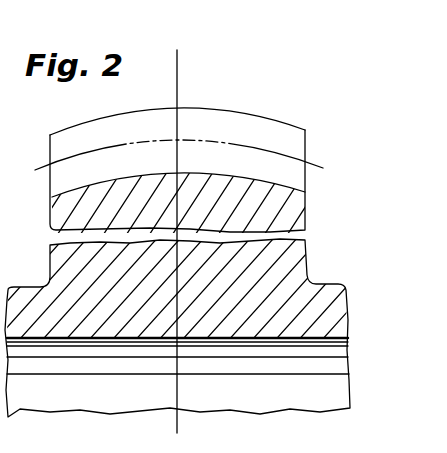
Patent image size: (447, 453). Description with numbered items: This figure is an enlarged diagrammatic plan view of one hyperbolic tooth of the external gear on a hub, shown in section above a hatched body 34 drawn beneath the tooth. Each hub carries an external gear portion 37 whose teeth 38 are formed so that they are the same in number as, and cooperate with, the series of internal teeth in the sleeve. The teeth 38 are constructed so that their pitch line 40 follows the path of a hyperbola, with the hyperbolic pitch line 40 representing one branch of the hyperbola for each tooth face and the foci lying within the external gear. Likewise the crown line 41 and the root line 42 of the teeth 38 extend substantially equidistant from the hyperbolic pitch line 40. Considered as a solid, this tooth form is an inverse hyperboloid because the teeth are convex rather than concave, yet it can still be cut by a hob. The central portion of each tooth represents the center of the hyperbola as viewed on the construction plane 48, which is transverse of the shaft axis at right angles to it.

The base body 34 is at (343, 302).
The external gear portion 37 is at (292, 208).
The teeth 38 is at (262, 132).
The pitch line 40 is at (317, 158).
The crown line 41 is at (145, 110).
The root line 42 is at (128, 177).
The construction plane 48 is at (180, 79).